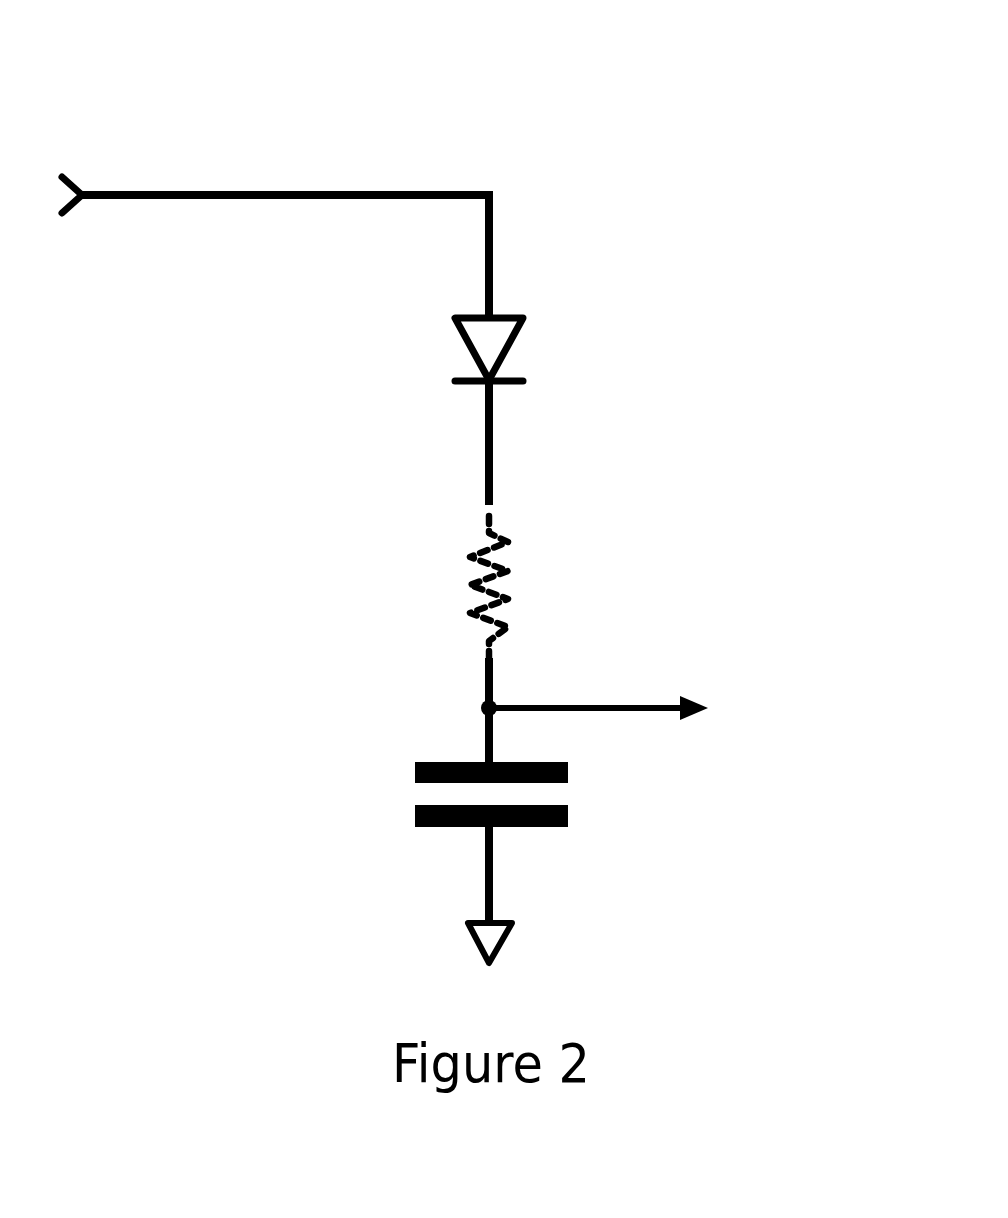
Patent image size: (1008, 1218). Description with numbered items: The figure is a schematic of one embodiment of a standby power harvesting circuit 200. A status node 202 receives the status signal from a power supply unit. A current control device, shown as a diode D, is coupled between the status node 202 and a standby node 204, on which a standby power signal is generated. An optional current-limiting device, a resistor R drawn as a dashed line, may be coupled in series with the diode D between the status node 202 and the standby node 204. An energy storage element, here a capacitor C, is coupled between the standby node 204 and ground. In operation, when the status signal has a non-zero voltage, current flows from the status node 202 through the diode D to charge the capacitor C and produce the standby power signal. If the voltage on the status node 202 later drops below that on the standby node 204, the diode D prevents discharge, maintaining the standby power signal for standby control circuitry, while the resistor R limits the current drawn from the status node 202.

The standby power harvesting circuit 200 is at (584, 190).
The status node 202 is at (490, 193).
The standby node 204 is at (488, 708).